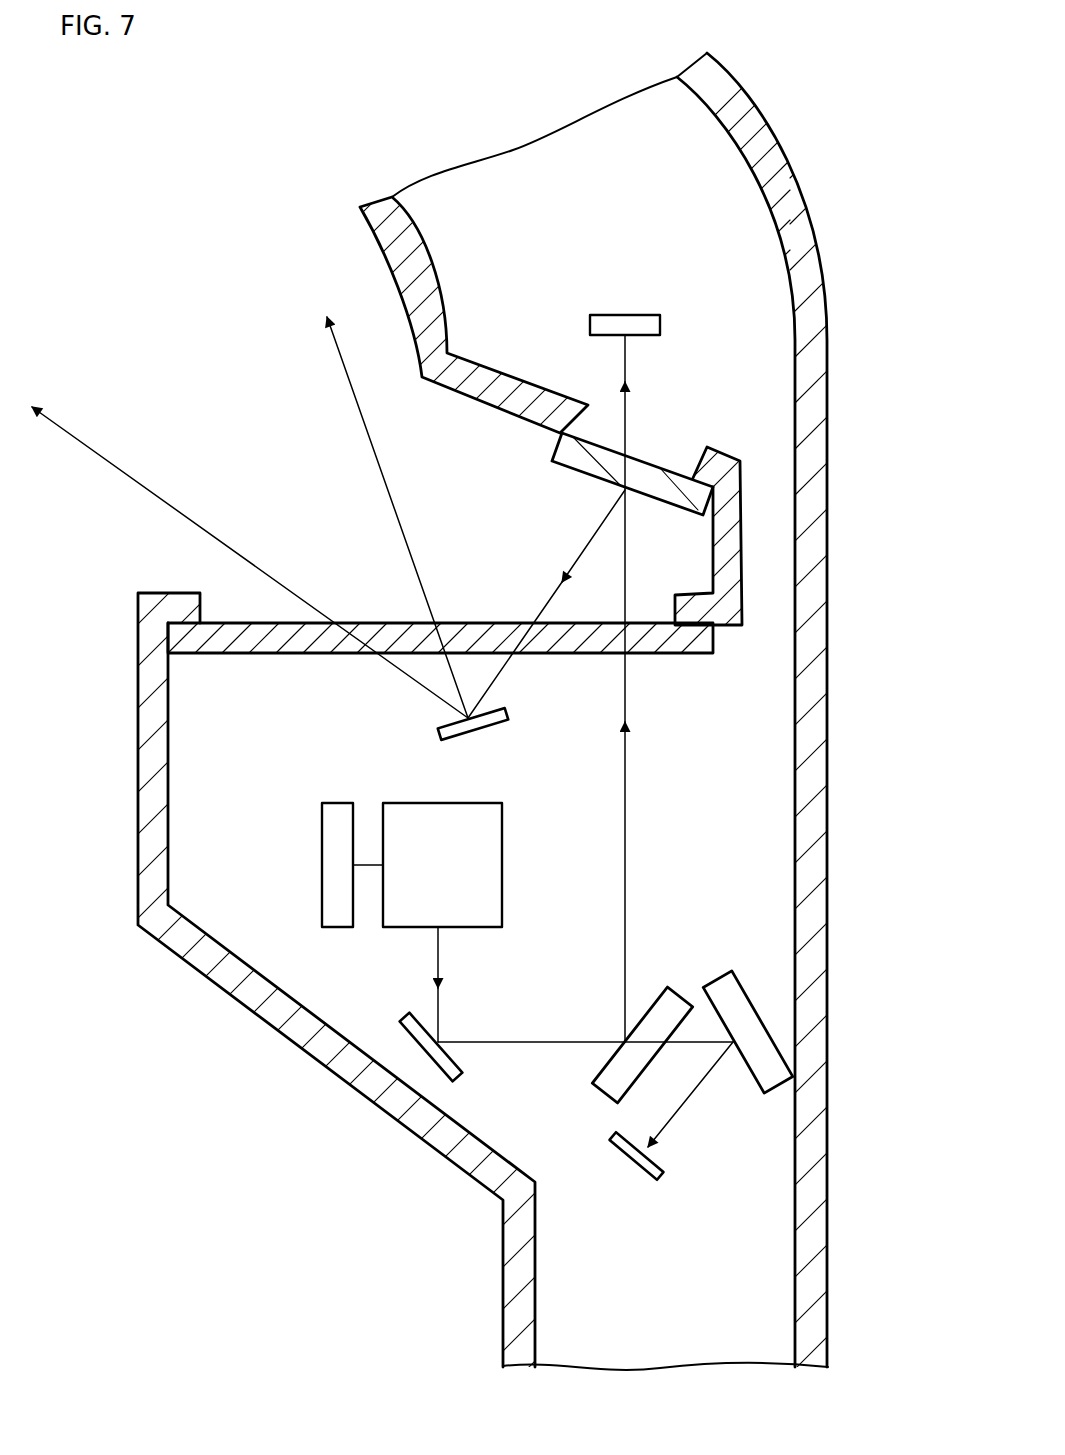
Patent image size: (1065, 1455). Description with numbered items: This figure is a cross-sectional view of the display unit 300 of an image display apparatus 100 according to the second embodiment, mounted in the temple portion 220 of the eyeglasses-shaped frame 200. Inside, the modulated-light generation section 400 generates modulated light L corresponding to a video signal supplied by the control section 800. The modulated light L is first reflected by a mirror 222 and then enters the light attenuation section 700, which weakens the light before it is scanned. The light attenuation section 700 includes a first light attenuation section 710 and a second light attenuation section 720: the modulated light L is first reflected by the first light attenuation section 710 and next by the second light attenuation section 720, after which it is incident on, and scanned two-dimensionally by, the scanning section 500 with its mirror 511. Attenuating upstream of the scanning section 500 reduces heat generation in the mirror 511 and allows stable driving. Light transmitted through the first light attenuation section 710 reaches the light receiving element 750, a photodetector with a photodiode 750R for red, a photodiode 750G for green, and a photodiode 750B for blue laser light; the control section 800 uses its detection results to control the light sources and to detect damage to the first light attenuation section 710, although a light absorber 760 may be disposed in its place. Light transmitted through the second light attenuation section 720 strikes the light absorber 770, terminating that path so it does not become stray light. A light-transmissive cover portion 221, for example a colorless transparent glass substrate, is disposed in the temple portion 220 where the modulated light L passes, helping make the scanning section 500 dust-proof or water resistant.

The projector 100 is at (341, 106).
The frame 200 is at (780, 126).
The temple portion 220 is at (807, 283).
The cover portion 221 is at (260, 640).
The mirror 222 is at (415, 1033).
The display unit 300 is at (683, 855).
The modulated-light generation section 400 is at (402, 893).
The scanning section 500 is at (437, 737).
The mirror 511 is at (490, 735).
The light attenuation section 700 is at (511, 840).
The first light attenuation section 710 is at (608, 1083).
The second light attenuation section 720 is at (582, 462).
The light receiving element 750 is at (712, 990).
The photodiode 750R is at (748, 1032).
The photodiode 750G is at (748, 1032).
The photodiode 750B is at (757, 1008).
The light absorber 760 is at (663, 1172).
The light absorber 770 is at (607, 323).
The control section 800 is at (333, 837).
The modulated light L is at (627, 783).